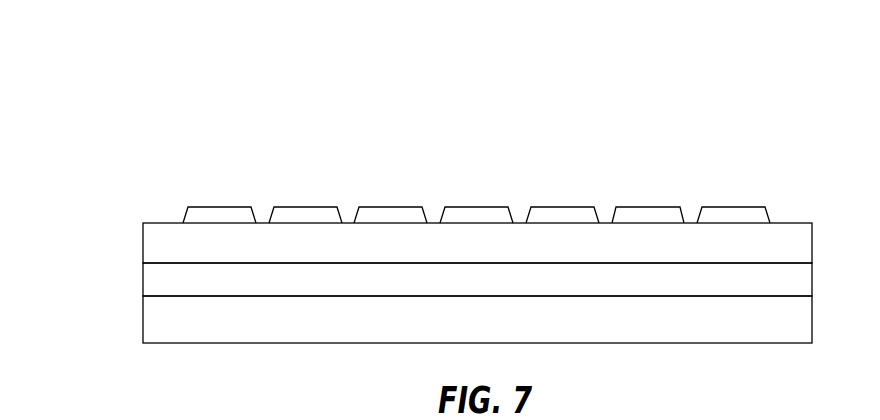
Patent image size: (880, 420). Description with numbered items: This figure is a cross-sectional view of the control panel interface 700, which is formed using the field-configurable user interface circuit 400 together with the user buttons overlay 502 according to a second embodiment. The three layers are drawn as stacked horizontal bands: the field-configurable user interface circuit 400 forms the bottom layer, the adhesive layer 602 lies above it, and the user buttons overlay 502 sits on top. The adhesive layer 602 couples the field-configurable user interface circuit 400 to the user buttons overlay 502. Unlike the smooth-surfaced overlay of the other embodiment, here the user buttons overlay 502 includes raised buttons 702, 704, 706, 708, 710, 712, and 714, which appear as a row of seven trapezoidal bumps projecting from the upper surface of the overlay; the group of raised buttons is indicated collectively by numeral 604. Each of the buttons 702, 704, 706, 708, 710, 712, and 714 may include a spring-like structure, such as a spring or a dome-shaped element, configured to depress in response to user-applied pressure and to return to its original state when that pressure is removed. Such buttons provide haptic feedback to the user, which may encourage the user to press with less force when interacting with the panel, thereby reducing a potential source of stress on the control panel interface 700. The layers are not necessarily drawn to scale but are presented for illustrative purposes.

The control panel interface 700 is at (108, 116).
The user buttons 604 is at (413, 126).
The raised button 702 is at (224, 198).
The raised button 704 is at (319, 198).
The raised button 706 is at (398, 198).
The raised button 708 is at (477, 198).
The raised button 710 is at (557, 198).
The raised button 712 is at (645, 198).
The raised button 714 is at (741, 198).
The user buttons overlay 502 is at (143, 246).
The adhesive layer 602 is at (143, 279).
The field-configurable user interface circuit 400 is at (143, 320).